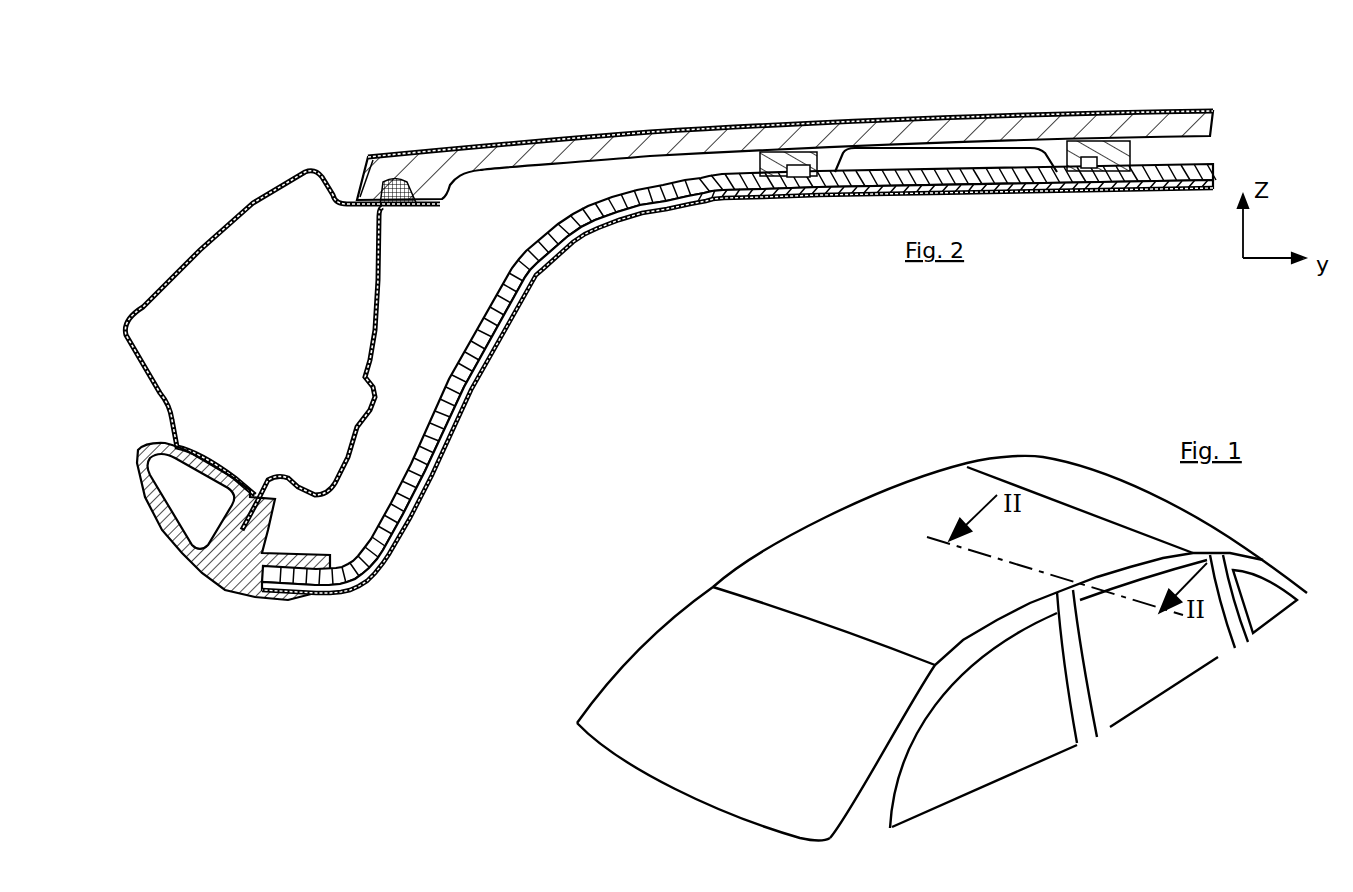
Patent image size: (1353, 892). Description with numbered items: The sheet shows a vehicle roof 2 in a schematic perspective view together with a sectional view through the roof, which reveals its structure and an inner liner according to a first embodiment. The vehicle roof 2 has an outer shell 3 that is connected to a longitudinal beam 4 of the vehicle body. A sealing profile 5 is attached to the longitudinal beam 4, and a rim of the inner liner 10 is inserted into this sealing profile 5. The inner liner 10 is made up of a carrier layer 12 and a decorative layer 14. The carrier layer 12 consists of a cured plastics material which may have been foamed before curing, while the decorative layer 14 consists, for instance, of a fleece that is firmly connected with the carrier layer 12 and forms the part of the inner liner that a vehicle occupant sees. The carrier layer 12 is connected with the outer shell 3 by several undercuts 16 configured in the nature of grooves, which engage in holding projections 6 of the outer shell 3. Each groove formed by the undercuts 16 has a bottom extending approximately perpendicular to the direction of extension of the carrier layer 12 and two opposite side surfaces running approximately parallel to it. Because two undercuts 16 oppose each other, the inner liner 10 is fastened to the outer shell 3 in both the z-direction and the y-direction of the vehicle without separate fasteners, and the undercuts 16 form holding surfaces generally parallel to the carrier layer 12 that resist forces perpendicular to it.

In FIG. 2, the vehicle roof 2 is at (773, 136).
In FIG. 1, the vehicle roof 2 is at (845, 530).
In FIG. 2, the outer shell 3 is at (656, 145).
In FIG. 2, the longitudinal beam 4 is at (274, 197).
In FIG. 2, the sealing profile 5 is at (215, 582).
In FIG. 2, the holding projections 6 is at (815, 177).
In FIG. 2, the inner liner 10 is at (739, 370).
In FIG. 2, the carrier layer 12 is at (616, 210).
In FIG. 2, the decorative layer 14 is at (696, 205).
In FIG. 2, the undercuts 16 is at (792, 178).